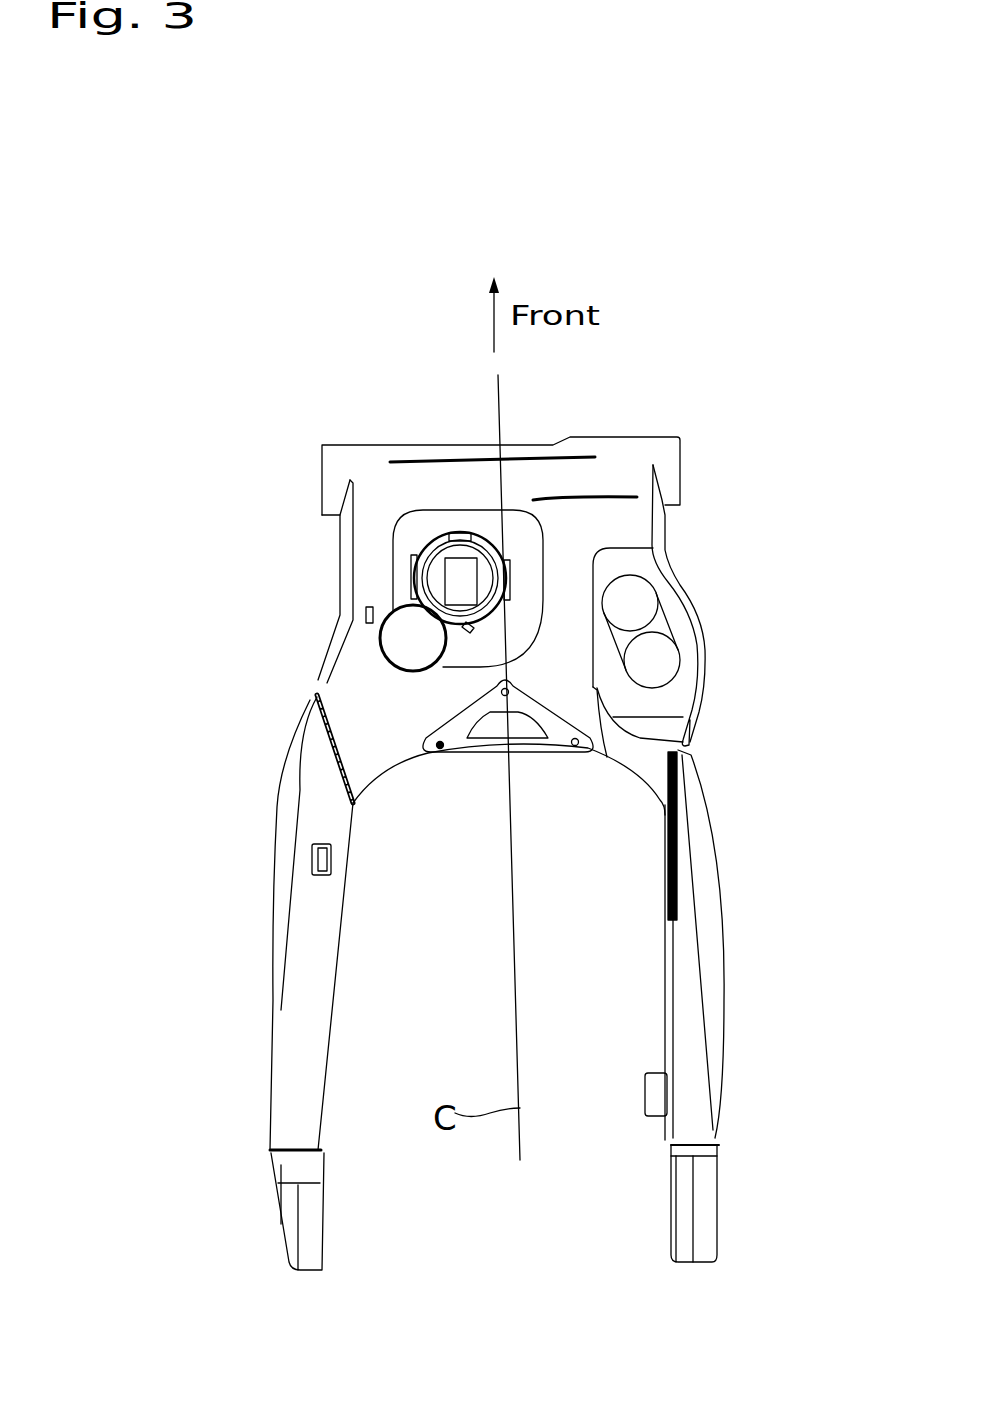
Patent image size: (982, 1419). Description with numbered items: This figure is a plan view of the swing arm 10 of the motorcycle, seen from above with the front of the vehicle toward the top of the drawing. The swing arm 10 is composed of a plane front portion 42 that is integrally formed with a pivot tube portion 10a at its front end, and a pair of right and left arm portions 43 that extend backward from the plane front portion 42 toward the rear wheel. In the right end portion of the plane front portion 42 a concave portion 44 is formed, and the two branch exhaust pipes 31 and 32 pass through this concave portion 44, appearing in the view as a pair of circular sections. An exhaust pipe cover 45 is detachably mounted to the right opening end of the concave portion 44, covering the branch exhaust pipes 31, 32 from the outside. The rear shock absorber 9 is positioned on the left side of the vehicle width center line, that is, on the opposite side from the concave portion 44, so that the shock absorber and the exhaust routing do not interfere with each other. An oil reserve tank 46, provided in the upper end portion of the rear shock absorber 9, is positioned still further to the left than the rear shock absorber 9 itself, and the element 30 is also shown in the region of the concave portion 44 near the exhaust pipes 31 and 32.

The rear shock absorber 9 is at (438, 533).
The swing arm 10 is at (230, 357).
The pivot tube portion 10a is at (330, 458).
The boss portion 30 is at (680, 647).
The branch exhaust pipe 31 is at (660, 617).
The branch exhaust pipe 32 is at (683, 667).
The plane front portion 42 is at (357, 650).
The arm portion 43 is at (300, 1023).
The concave portion 44 is at (607, 757).
The exhaust pipe cover 45 is at (677, 565).
The oil reserve tank 46 is at (387, 618).